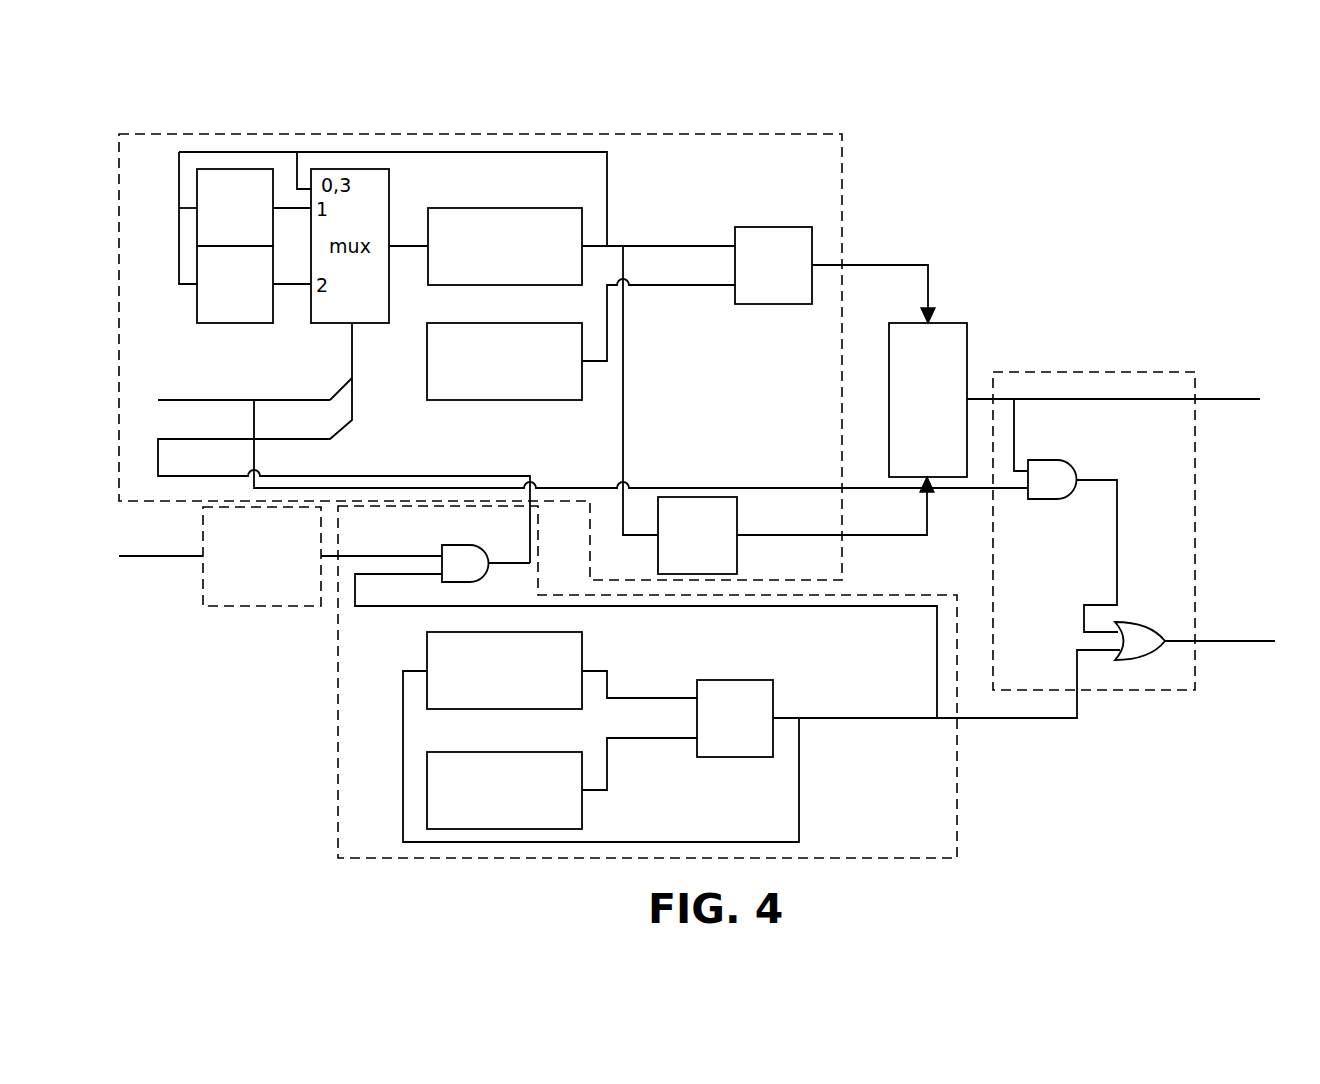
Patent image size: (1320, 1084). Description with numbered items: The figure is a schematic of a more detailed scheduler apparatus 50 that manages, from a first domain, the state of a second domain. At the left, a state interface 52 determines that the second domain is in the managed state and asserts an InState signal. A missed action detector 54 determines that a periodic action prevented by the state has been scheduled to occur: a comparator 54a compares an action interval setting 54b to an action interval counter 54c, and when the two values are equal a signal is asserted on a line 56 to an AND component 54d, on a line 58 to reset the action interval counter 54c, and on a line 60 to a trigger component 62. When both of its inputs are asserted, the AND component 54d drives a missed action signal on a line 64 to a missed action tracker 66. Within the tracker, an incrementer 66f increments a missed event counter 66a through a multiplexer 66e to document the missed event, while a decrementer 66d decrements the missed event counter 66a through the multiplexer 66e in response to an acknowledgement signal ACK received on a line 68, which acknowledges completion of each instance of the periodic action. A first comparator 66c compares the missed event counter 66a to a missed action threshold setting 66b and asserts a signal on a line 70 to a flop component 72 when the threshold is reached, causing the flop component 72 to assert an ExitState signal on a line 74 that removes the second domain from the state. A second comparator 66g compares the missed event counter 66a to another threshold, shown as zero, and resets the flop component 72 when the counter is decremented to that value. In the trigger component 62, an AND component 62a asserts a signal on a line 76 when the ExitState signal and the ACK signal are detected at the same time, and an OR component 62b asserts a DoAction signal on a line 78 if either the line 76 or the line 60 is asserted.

The scheduler apparatus 50 is at (770, 95).
The state interface 52 is at (244, 607).
The missed action detector 54 is at (338, 748).
The comparator 54a is at (740, 680).
The action interval setting 54b is at (582, 815).
The action interval counter 54c is at (582, 657).
The AND component 54d is at (455, 582).
The line 56 is at (420, 607).
The line 58 is at (799, 783).
The line 60 is at (1000, 718).
The trigger component 62 is at (1120, 372).
The AND component 62a is at (1040, 499).
The OR component 62b is at (1148, 622).
The line 64 is at (514, 562).
The missed action tracker 66 is at (842, 158).
The missed event counter 66a is at (505, 208).
The missed action threshold setting 66b is at (515, 400).
The first comparator 66c is at (773, 227).
The decrementer 66d is at (273, 218).
The multiplexer 66e is at (370, 323).
The incrementer 66f is at (262, 323).
The second comparator 66g is at (737, 528).
The line 68 is at (222, 400).
The line 70 is at (893, 265).
The flop component 72 is at (967, 350).
The line 74 is at (1180, 400).
The line 76 is at (1117, 530).
The line 78 is at (1262, 641).